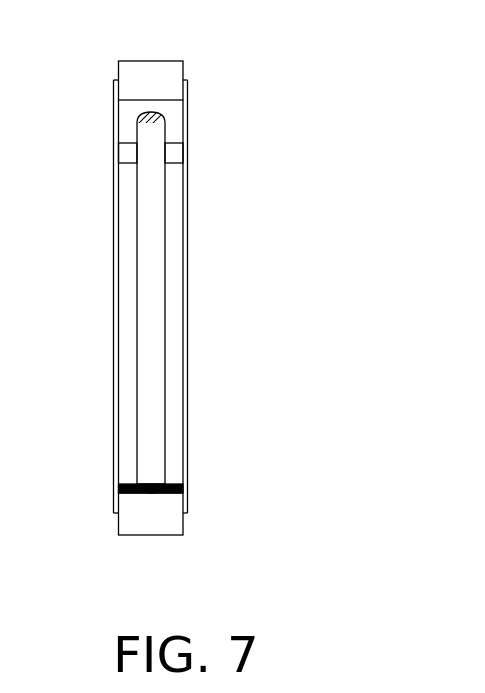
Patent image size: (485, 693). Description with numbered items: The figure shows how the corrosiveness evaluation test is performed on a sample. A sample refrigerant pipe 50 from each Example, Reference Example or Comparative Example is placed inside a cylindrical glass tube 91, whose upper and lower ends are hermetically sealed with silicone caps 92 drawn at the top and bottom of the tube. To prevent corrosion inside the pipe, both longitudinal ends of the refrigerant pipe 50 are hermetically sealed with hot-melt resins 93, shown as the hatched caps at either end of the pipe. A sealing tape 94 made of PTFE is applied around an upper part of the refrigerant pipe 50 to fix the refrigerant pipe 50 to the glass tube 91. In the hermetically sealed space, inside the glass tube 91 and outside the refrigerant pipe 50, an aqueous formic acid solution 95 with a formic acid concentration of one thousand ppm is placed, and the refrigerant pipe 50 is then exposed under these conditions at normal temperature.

The refrigerant pipe 50 is at (153, 284).
The cylindrical glass tube 91 is at (113, 243).
The end cap 92 is at (150, 70).
The hot-melt resin 93 is at (163, 115).
The sealing tape 94 is at (118, 151).
The aqueous formic acid solution 95 is at (185, 488).